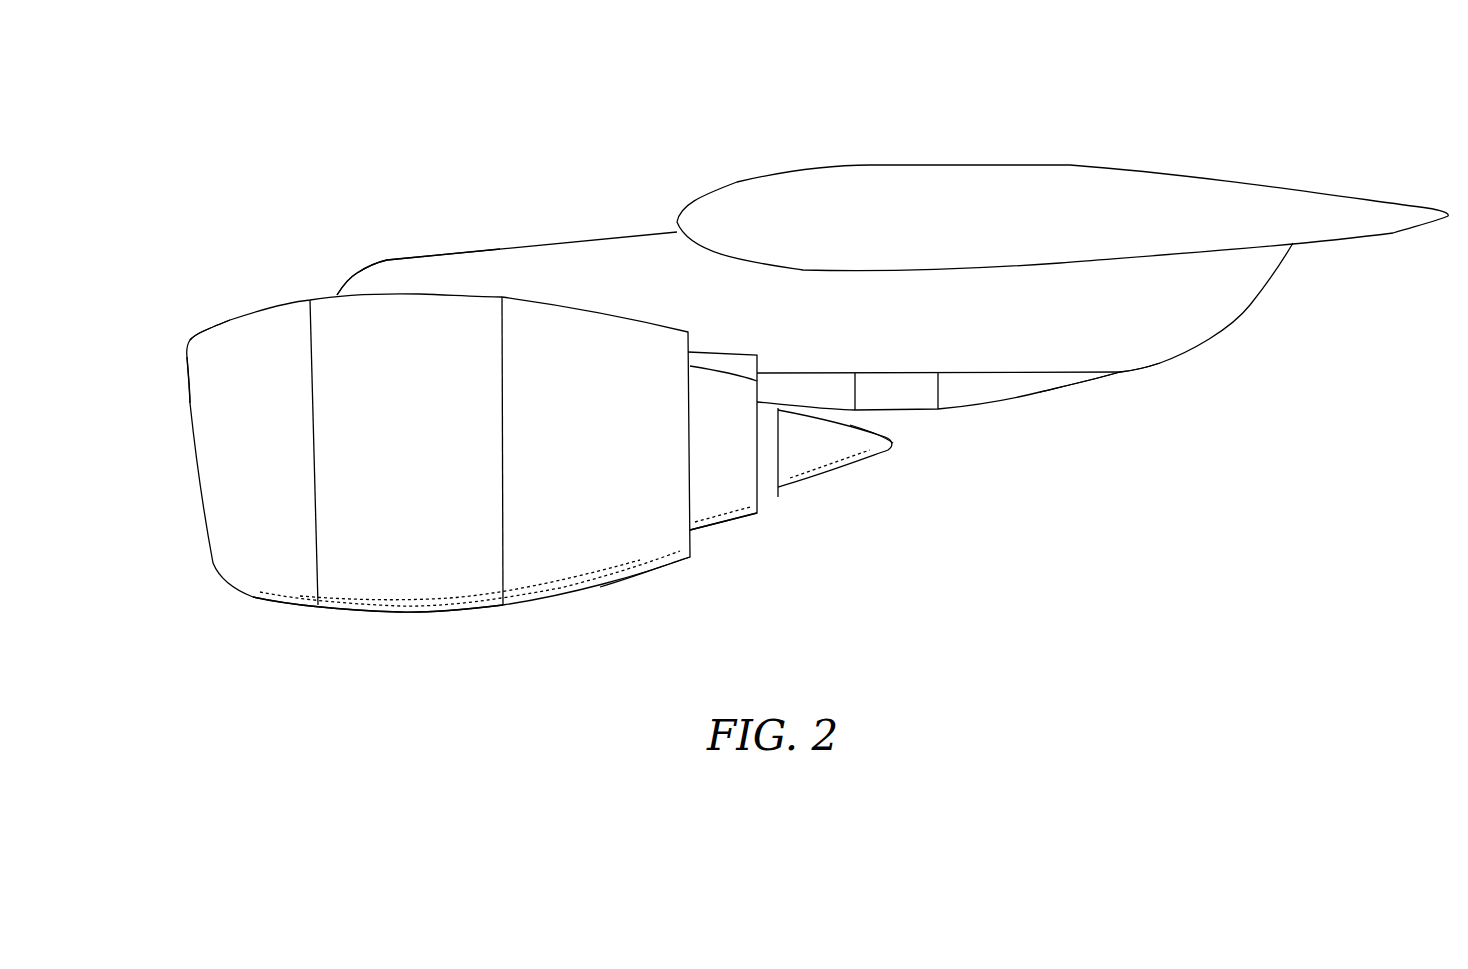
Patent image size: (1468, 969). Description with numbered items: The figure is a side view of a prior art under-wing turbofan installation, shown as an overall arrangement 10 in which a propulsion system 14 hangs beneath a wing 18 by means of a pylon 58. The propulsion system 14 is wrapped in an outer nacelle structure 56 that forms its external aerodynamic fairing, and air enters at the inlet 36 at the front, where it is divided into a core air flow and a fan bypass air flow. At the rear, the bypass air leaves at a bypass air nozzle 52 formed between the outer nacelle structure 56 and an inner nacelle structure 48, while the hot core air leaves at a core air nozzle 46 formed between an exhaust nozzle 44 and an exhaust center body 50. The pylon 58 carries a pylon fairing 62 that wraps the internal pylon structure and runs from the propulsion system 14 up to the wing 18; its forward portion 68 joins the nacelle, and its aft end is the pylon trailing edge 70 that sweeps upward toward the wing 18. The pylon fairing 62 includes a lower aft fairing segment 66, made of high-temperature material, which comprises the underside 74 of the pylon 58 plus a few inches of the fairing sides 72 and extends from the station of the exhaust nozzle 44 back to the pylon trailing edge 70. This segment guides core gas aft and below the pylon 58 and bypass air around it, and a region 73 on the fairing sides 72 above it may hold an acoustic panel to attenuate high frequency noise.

The propulsion system 10 is at (280, 102).
The propulsion system 14 is at (245, 295).
The wing 18 is at (825, 172).
The inlet 36 is at (183, 387).
The exhaust nozzle 44 is at (768, 505).
The core air nozzle 46 is at (783, 498).
The inner nacelle structure 48 is at (723, 523).
The exhaust center body 50 is at (867, 480).
The bypass air nozzle 52 is at (698, 558).
The outer nacelle structure 56 is at (403, 613).
The pylon 58 is at (587, 232).
The pylon fairing 62 is at (422, 250).
The lower aft fairing segment 66 is at (998, 410).
The pylon leading edge 68 is at (357, 272).
The pylon trailing edge 70 is at (1268, 282).
The fairing sides 72 is at (1132, 350).
The region 73 is at (985, 348).
The underside 74 is at (917, 413).